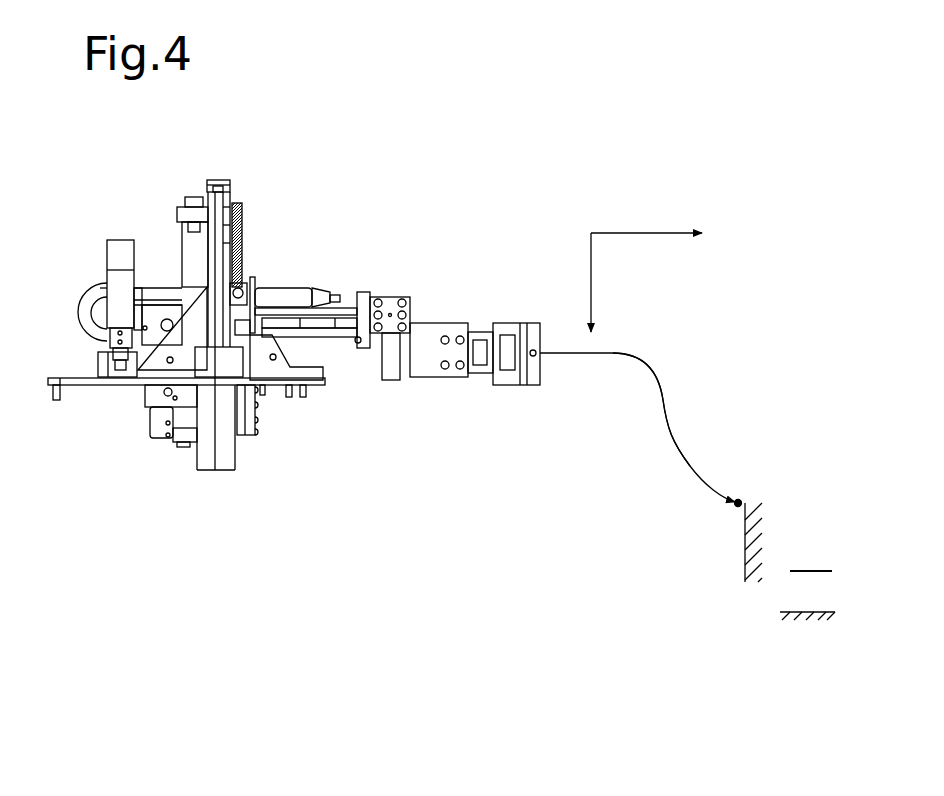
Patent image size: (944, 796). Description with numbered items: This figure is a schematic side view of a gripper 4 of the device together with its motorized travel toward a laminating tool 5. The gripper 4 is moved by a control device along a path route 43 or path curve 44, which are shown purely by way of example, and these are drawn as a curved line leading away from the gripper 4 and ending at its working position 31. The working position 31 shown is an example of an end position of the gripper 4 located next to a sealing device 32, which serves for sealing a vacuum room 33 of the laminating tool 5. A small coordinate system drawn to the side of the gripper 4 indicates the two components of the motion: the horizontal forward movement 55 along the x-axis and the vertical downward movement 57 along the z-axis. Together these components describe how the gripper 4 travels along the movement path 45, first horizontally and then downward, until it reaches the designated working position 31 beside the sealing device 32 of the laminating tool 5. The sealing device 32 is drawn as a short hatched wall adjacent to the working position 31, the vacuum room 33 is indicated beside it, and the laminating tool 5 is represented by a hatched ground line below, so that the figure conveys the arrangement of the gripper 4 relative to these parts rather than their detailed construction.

The gripper 4 is at (306, 216).
The horizontal forward movement 55 is at (633, 232).
The vertical downward movement 57 is at (591, 240).
The path curve 44 is at (650, 367).
The movement path 45 is at (665, 418).
The path route 43 is at (668, 450).
The working position 31 is at (741, 500).
The sealing device 32 is at (745, 537).
The vacuum room 33 is at (812, 549).
The laminating tool 5 is at (815, 617).